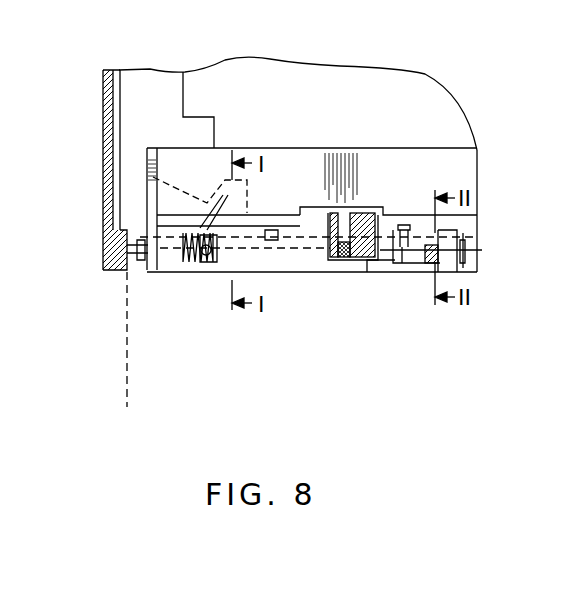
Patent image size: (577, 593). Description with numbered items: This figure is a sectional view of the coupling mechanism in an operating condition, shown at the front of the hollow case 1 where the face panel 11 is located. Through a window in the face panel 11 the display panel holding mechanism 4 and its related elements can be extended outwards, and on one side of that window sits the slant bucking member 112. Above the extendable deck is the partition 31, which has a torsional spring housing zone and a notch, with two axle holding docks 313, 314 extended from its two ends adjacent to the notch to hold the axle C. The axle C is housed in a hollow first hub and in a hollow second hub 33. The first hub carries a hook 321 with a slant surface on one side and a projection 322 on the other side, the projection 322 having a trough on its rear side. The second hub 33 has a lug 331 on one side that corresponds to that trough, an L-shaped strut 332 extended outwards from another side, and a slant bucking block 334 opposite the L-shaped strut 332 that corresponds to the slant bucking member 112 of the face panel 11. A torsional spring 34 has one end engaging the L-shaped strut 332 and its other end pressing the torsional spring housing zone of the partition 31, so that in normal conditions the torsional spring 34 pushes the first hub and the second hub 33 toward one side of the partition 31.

The case 1 is at (107, 117).
The face panel 11 is at (107, 242).
The slant bucking member 112 is at (153, 177).
The partition 31 is at (177, 160).
The axle holding dock 313 is at (145, 258).
The axle holding dock 314 is at (452, 260).
The hook 321 is at (425, 253).
The projection 322 is at (364, 212).
The second hub 33 is at (302, 262).
The lug 331 is at (338, 257).
The L-shaped strut 332 is at (216, 252).
The slant bucking block 334 is at (210, 228).
The torsional spring 34 is at (185, 262).
The display panel holding mechanism 4 is at (467, 163).
The axle C is at (198, 258).